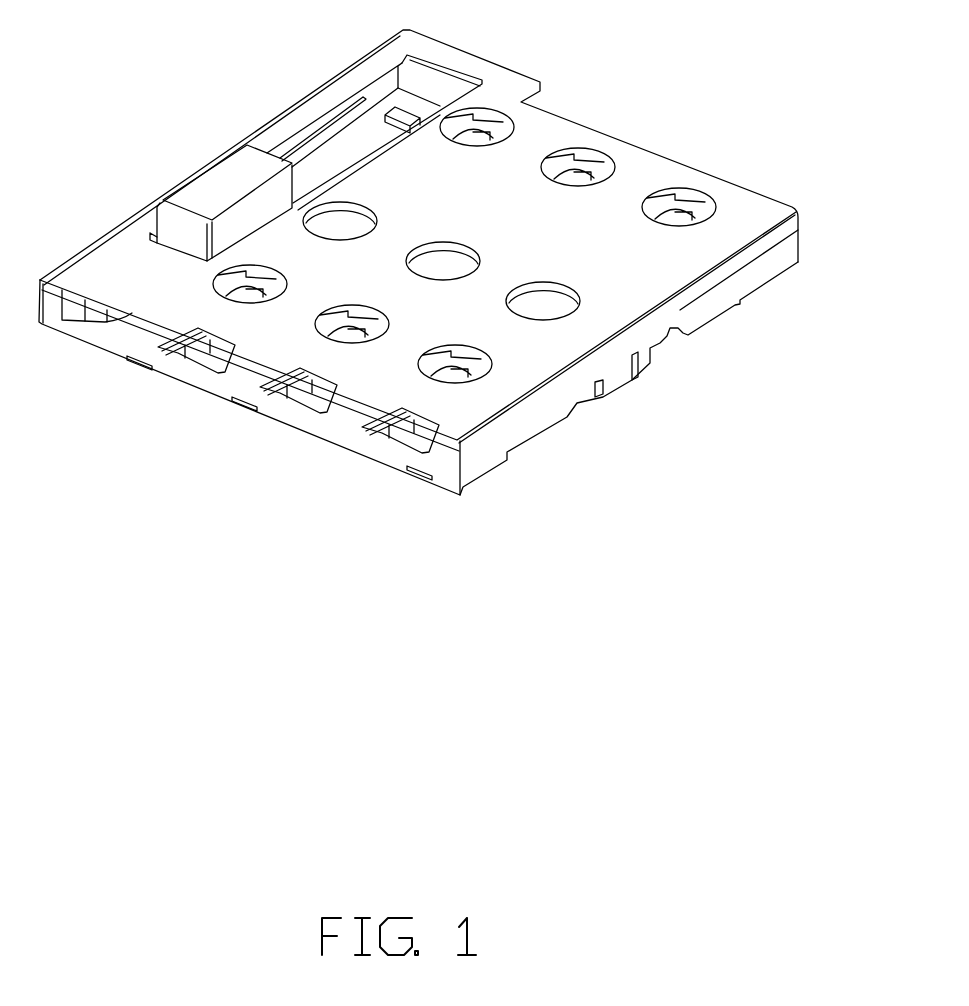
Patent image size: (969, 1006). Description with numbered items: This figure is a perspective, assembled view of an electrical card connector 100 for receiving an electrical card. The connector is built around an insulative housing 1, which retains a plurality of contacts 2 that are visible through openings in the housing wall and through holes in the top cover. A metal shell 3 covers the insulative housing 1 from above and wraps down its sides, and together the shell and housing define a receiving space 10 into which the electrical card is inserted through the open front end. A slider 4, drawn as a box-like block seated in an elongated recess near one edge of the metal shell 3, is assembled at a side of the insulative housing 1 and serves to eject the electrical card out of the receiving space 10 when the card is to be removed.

The electrical card connector 100 is at (205, 124).
The insulative housing 1 is at (353, 417).
The contacts 2 is at (313, 387).
The metal shell 3 is at (637, 287).
The slider 4 is at (208, 192).
The receiving space 10 is at (140, 327).